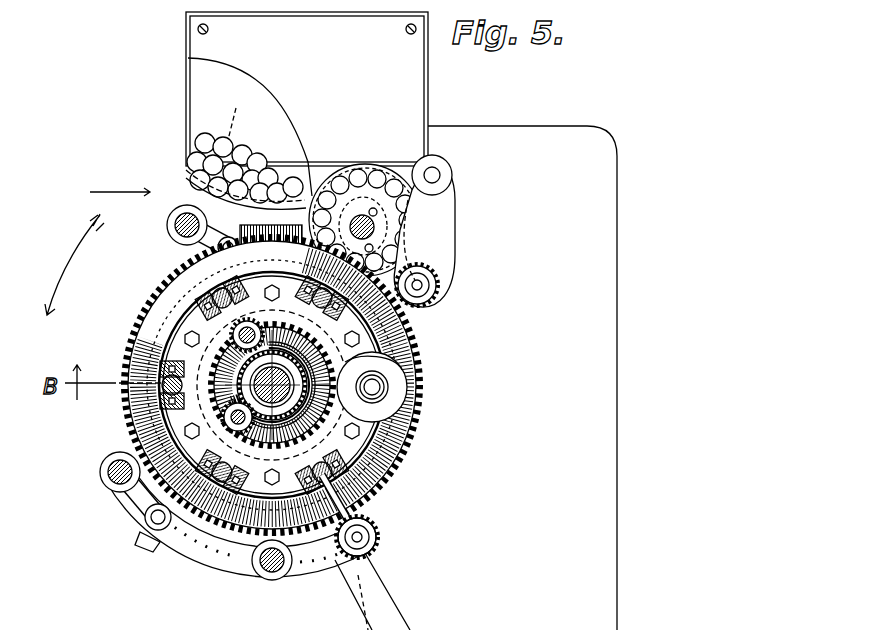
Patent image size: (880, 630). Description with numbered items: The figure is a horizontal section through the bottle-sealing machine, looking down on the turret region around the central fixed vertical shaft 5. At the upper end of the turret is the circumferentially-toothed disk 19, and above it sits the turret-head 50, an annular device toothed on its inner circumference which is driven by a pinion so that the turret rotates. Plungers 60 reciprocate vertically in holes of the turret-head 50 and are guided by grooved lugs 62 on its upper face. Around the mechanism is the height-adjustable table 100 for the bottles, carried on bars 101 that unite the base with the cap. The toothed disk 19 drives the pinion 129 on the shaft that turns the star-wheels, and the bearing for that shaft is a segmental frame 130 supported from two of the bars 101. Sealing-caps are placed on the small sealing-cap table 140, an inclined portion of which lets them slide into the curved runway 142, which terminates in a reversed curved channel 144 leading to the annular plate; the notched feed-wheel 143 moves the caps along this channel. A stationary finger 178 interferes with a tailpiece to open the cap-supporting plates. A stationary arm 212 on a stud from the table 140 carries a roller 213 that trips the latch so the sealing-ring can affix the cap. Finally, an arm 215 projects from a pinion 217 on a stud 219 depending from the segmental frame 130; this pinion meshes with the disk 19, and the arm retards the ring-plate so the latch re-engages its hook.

The central fixed vertical shaft 5 is at (420, 331).
The circumferentially-toothed disk 19 is at (142, 329).
The turret-head 50 is at (425, 438).
The plungers 60 is at (351, 591).
The grooved lugs 62 is at (430, 406).
The table 100 is at (522, 378).
The bars 101 is at (100, 471).
The pinion 129 is at (378, 536).
The segmental frame 130 is at (232, 594).
The sealing-cap table 140 is at (307, 110).
The curved runway 142 is at (182, 196).
The notched feed-wheel 143 is at (458, 213).
The reversed curved channel 144 is at (452, 187).
The stationary finger 178 is at (408, 158).
The stationary arm 212 is at (176, 264).
The roller 213 is at (150, 282).
The arm 215 is at (140, 548).
The pinion 217 is at (144, 518).
The stud 219 is at (118, 540).